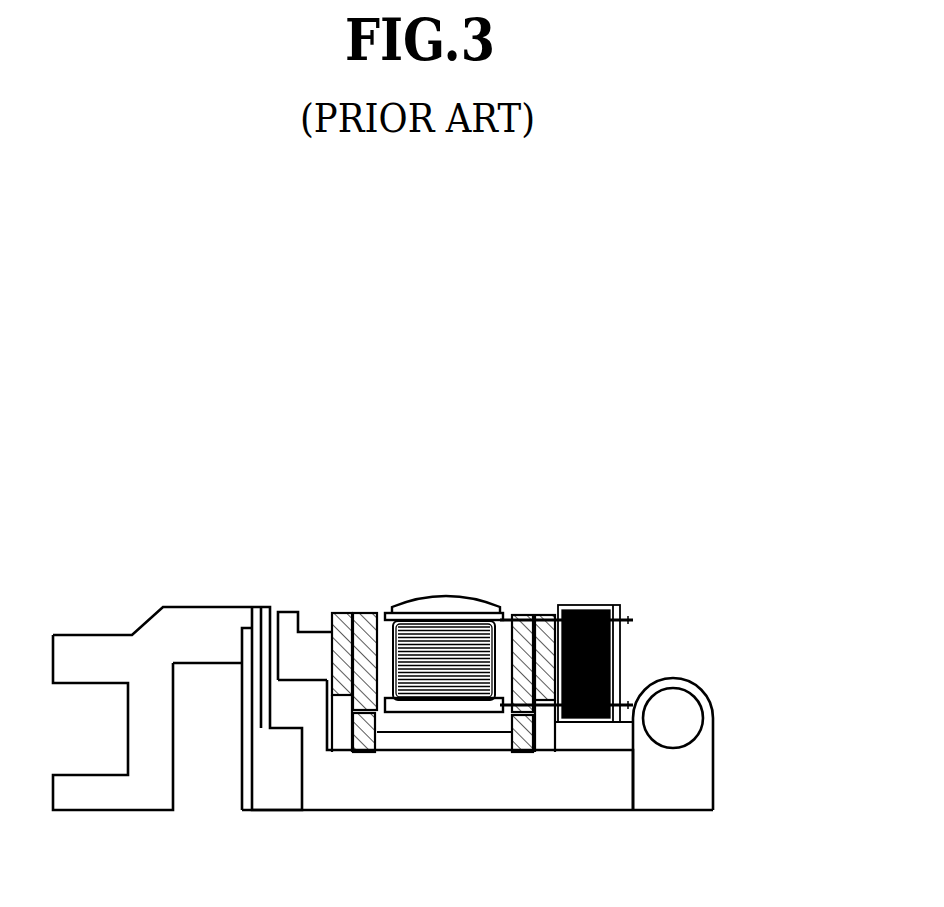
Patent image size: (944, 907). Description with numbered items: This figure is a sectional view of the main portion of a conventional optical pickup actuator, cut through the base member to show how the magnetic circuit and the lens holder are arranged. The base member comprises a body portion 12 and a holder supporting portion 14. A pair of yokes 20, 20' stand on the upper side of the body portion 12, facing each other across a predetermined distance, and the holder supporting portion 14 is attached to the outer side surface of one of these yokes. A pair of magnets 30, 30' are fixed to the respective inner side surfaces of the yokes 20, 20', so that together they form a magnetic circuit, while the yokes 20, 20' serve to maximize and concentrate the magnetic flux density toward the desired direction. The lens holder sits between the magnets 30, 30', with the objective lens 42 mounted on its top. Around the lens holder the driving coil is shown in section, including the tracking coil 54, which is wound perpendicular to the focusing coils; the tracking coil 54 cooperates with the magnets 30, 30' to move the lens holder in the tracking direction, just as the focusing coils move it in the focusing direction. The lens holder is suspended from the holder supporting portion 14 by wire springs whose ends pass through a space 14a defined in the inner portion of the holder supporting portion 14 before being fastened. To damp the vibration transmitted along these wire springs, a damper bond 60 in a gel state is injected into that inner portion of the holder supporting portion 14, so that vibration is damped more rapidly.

The body portion 12 is at (703, 772).
The holder supporting portion 14 is at (613, 643).
The space 14a is at (597, 607).
The yoke 20 is at (327, 627).
The yoke 20' is at (546, 623).
The magnet 30 is at (371, 604).
The magnet 30' is at (508, 604).
The objective lens 42 is at (438, 602).
The tracking coil 54 is at (445, 680).
The damper bond 60 is at (580, 722).